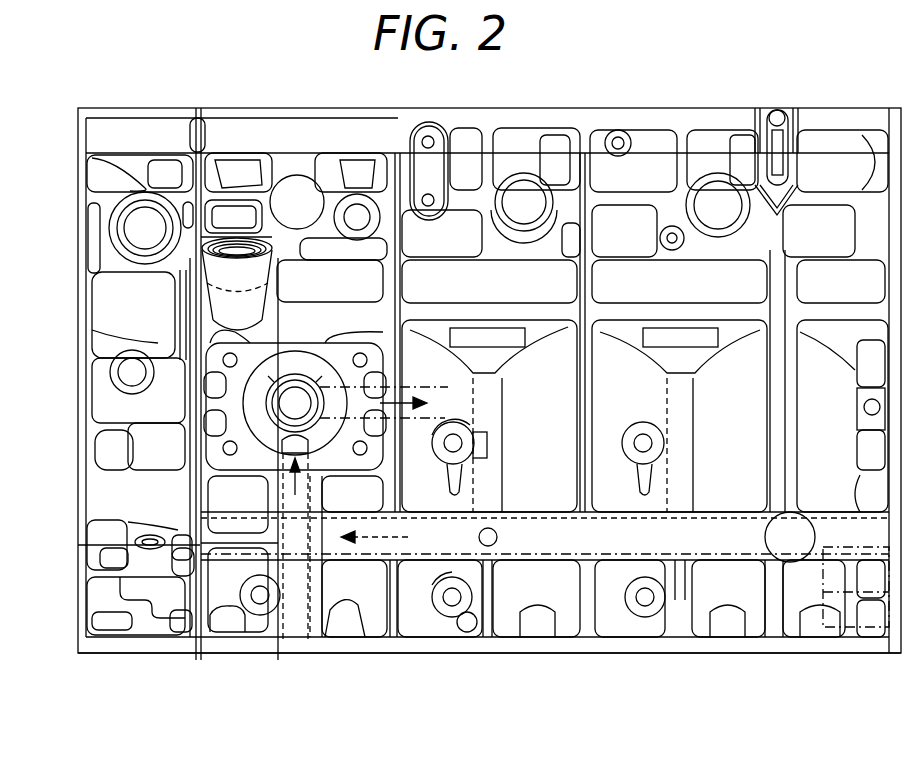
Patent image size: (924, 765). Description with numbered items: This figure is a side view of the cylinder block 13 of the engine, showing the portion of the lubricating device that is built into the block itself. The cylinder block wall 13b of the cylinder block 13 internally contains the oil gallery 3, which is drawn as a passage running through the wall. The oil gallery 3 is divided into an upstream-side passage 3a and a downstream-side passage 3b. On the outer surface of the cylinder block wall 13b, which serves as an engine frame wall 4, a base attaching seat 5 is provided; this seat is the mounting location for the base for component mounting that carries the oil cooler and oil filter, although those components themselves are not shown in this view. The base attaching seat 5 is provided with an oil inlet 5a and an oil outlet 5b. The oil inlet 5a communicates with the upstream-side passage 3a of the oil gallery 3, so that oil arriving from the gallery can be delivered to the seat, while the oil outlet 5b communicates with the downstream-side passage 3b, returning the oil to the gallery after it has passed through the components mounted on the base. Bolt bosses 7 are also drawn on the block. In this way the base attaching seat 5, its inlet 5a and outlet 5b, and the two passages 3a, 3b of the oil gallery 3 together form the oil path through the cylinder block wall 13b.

The oil gallery 3 is at (521, 522).
The upstream-side passage 3a is at (387, 526).
The downstream-side passage 3b is at (440, 400).
The engine frame wall 4 is at (489, 407).
The base attaching seat 5 is at (238, 425).
The oil inlet 5a is at (285, 462).
The oil outlet 5b is at (297, 395).
The bolt boss 7 is at (411, 422).
The cylinder block 13 is at (84, 511).
The cylinder block wall 13b is at (538, 397).